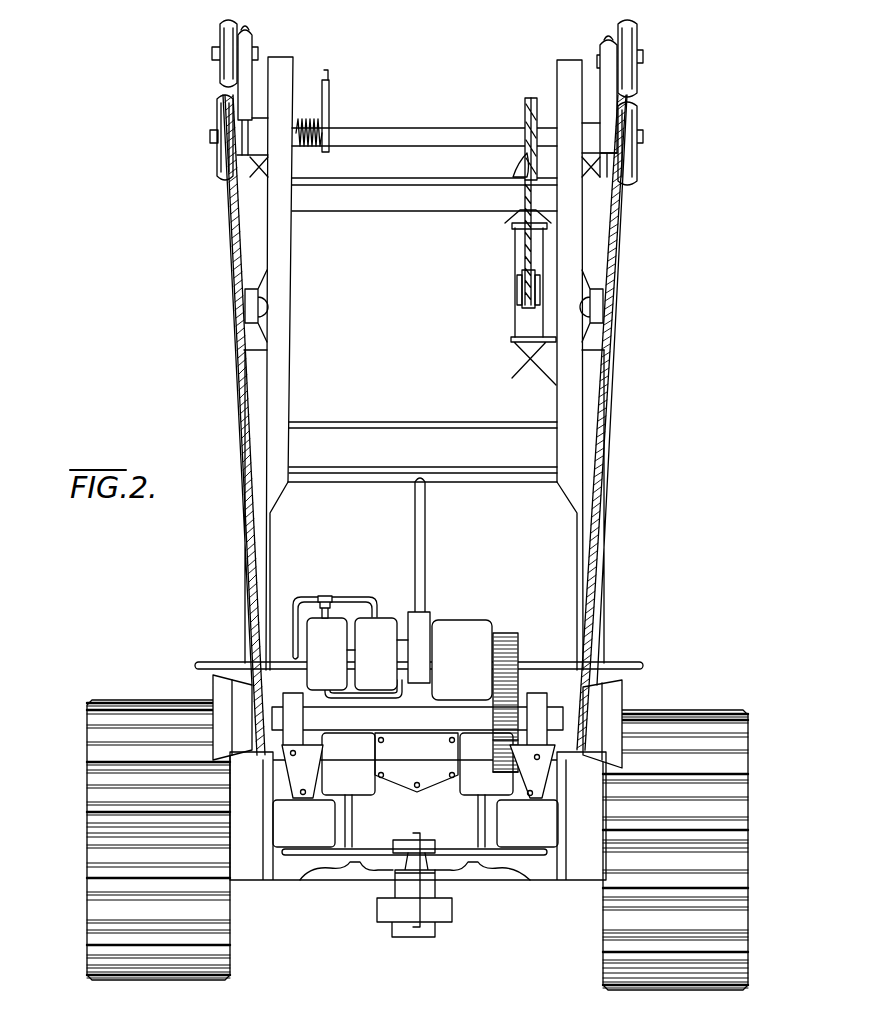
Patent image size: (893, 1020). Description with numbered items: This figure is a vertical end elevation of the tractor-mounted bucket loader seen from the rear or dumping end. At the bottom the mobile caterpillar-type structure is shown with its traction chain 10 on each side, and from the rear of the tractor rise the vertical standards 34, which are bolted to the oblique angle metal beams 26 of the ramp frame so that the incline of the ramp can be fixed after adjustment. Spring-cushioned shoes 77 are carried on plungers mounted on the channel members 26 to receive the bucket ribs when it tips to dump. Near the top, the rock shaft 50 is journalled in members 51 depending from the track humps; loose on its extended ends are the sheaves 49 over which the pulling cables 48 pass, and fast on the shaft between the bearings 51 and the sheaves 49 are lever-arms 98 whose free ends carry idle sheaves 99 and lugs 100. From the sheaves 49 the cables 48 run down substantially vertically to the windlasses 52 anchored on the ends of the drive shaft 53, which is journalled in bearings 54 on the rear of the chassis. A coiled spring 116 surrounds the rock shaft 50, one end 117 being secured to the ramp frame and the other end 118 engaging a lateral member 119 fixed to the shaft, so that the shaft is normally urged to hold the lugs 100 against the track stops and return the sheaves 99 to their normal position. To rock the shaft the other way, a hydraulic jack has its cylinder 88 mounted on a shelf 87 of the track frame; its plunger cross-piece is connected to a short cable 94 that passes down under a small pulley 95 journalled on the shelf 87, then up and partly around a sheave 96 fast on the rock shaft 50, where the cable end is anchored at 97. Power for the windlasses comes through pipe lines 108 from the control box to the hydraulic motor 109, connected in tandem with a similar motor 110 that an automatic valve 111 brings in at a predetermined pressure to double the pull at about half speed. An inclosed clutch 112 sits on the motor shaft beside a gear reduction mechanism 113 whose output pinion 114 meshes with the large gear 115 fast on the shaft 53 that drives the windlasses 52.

The traction chain 10 is at (95, 858).
The angle metal beam 26 is at (278, 258).
The vertical standard 34 is at (245, 618).
The pulling cable 48 is at (238, 372).
The sheave 49 is at (218, 115).
The rock shaft 50 is at (393, 128).
The depending member 51 is at (260, 150).
The windlass 52 is at (225, 693).
The drive shaft 53 is at (398, 722).
The bearing 54 is at (295, 735).
The shoe 77 is at (258, 305).
The shelf 87 is at (531, 360).
The cylinder 88 is at (522, 278).
The cable 94 is at (517, 243).
The small pulley 95 is at (518, 313).
The sheave 96 is at (524, 128).
The anchor 97 is at (516, 175).
The lever-arm 98 is at (249, 78).
The idle sheave 99 is at (215, 80).
The lug 100 is at (244, 32).
The pipe line 108 is at (305, 597).
The hydraulic motor 109 is at (388, 640).
The hydraulic motor 110 is at (340, 640).
The automatic valve 111 is at (324, 598).
The inclosed clutch 112 is at (422, 622).
The gear reduction mechanism 113 is at (475, 630).
The pinion 114 is at (508, 630).
The large gear 115 is at (495, 775).
The coiled spring 116 is at (312, 148).
The spring end 117 is at (294, 165).
The spring end 118 is at (323, 100).
The lateral member 119 is at (330, 84).